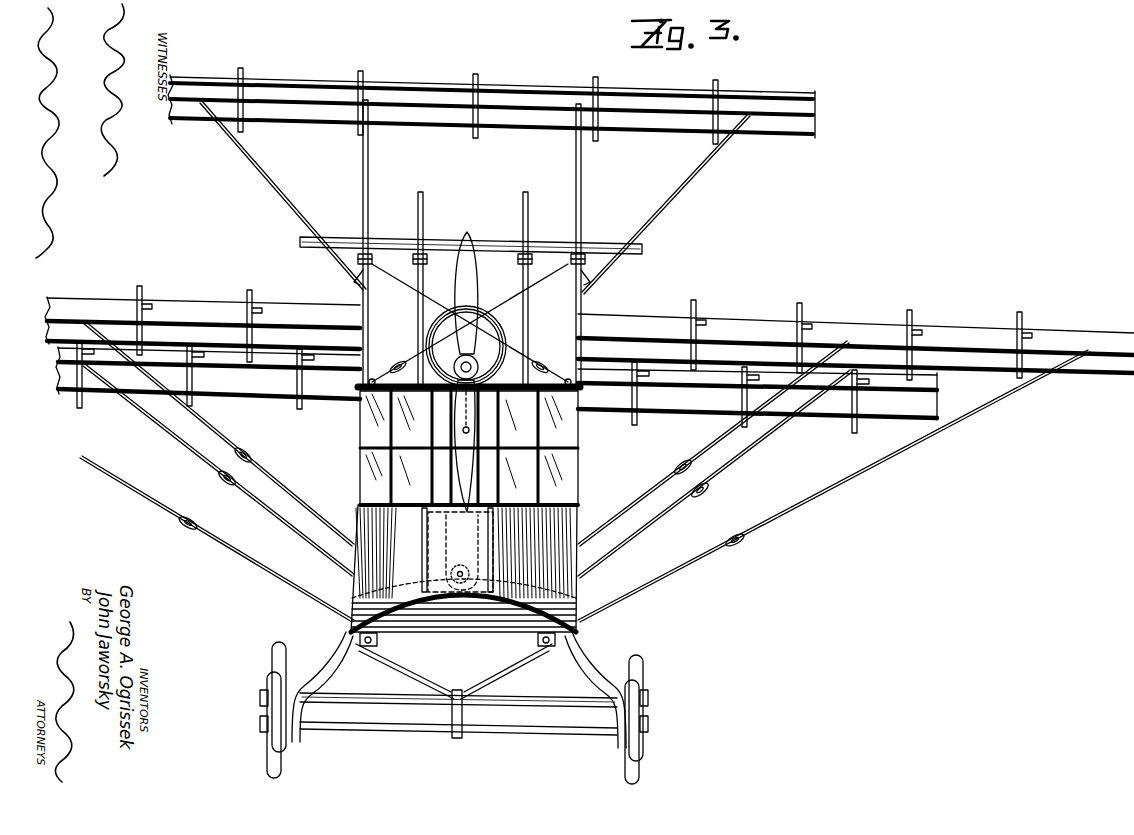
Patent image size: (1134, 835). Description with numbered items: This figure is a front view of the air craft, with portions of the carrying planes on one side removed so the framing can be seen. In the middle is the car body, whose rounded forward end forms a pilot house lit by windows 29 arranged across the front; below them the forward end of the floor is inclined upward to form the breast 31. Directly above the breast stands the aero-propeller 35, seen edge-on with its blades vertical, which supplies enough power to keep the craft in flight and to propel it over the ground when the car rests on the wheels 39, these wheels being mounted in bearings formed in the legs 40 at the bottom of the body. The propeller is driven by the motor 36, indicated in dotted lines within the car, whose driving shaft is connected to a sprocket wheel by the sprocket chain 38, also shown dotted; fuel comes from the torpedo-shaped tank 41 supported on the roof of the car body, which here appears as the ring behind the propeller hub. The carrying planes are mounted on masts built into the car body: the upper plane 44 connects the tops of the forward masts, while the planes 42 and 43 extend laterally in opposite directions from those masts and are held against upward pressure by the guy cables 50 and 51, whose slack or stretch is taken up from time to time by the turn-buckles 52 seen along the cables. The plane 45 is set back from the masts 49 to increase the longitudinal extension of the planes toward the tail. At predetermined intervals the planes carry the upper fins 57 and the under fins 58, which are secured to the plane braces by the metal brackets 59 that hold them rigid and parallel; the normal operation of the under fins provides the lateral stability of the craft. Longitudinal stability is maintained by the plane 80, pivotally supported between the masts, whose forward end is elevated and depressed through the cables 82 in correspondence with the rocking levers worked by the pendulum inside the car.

The windows 29 is at (372, 410).
The breast 31 is at (462, 619).
The aero-propeller 35 is at (466, 277).
The motor 36 is at (441, 516).
The sprocket chain 38 is at (452, 546).
The wheels 39 is at (278, 652).
The legs 40 is at (415, 679).
The torpedo-shaped tank 41 is at (490, 334).
The carrying plane 42 is at (1078, 334).
The carrying plane 43 is at (182, 307).
The carrying plane 44 is at (428, 96).
The carrying plane 45 is at (257, 387).
The masts 49 is at (525, 207).
The guy cable 50 is at (226, 546).
The guy cable 51 is at (286, 488).
The turn-buckles 52 is at (678, 467).
The upper fins 57 is at (250, 290).
The under fins 58 is at (252, 335).
The metal brackets 59 is at (258, 298).
The plane 80 is at (644, 248).
The cables 82 is at (470, 324).